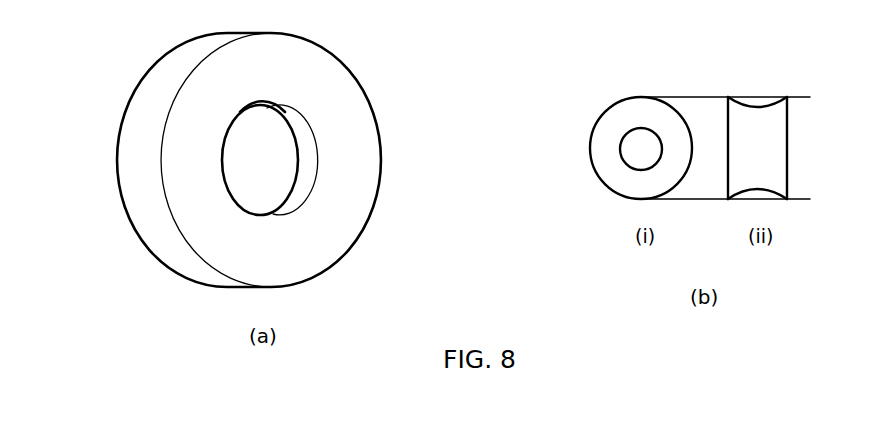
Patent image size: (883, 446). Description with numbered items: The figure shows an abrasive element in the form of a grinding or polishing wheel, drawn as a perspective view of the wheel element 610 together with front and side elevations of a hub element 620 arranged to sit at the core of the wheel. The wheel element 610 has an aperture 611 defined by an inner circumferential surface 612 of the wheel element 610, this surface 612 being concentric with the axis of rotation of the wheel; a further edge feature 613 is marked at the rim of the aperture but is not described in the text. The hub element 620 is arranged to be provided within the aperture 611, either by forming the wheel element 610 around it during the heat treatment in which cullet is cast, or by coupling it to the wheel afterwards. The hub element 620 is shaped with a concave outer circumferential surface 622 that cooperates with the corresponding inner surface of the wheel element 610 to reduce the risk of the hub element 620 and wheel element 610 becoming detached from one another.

The wheel element 610 is at (381, 186).
The aperture 611 is at (243, 166).
The inner circumferential surface 612 is at (300, 127).
The hole edge 613 is at (277, 102).
The hub element 620 is at (591, 161).
The concave outer circumferential surface 622 is at (757, 103).